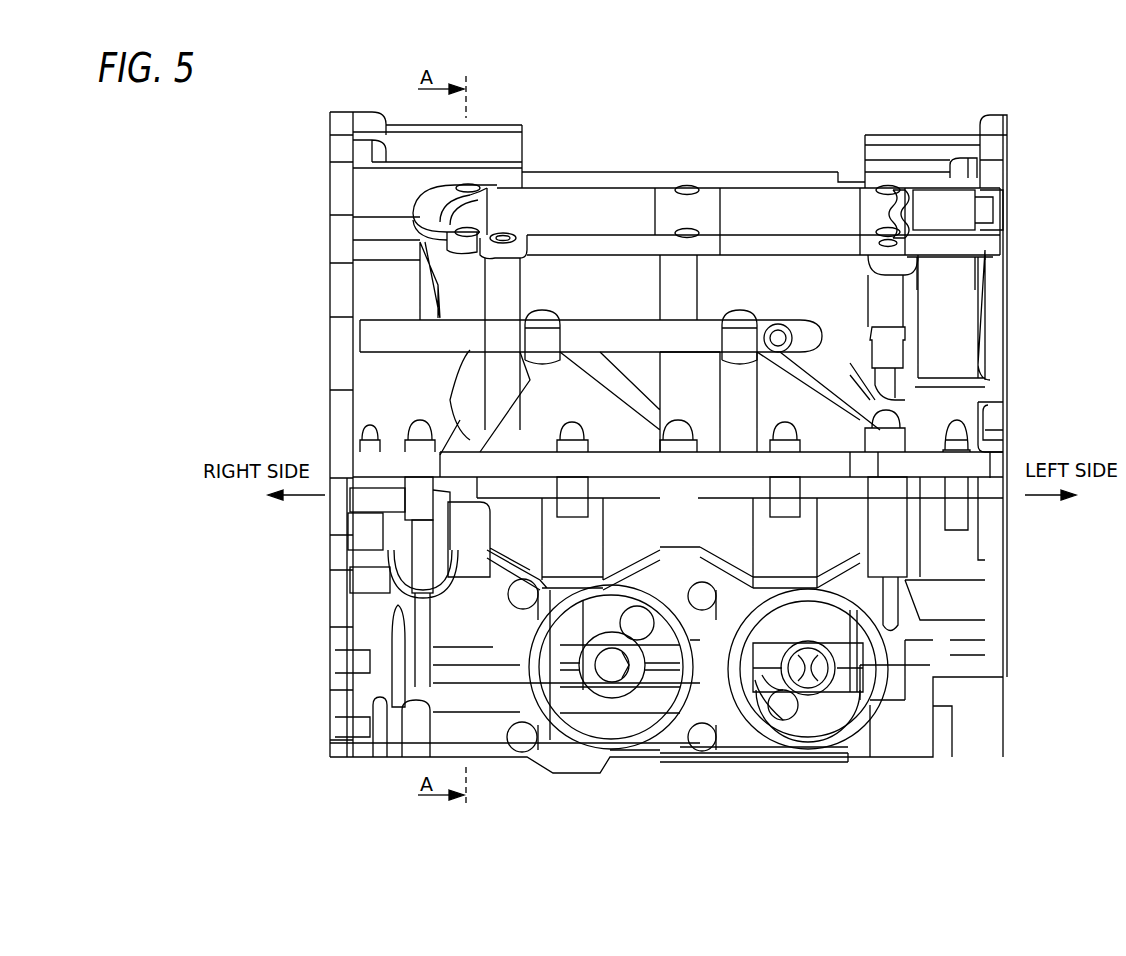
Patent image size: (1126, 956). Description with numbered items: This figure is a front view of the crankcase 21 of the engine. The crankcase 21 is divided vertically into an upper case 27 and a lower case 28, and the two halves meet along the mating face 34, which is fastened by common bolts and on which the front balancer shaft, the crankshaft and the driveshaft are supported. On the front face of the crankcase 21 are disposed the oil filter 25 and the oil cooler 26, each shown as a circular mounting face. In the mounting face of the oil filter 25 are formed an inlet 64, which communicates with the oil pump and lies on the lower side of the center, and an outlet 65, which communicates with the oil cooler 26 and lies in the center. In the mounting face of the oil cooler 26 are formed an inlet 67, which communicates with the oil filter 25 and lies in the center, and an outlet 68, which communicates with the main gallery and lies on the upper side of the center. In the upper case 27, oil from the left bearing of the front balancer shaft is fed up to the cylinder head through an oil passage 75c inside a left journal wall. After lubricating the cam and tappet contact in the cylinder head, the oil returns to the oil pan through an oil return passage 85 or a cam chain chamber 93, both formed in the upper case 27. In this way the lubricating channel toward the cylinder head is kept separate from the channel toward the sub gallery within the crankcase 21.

The crankcase 21 is at (985, 88).
The oil filter 25 is at (905, 700).
The oil cooler 26 is at (628, 740).
The upper case 27 is at (1000, 292).
The lower case 28 is at (992, 547).
The mating face 34 is at (930, 475).
The inlet 64 is at (785, 712).
The outlet 65 is at (893, 633).
The inlet 67 is at (610, 670).
The outlet 68 is at (640, 633).
The oil passage 75c is at (886, 232).
The oil return passage 85 is at (504, 233).
The cam chain chamber 93 is at (960, 198).